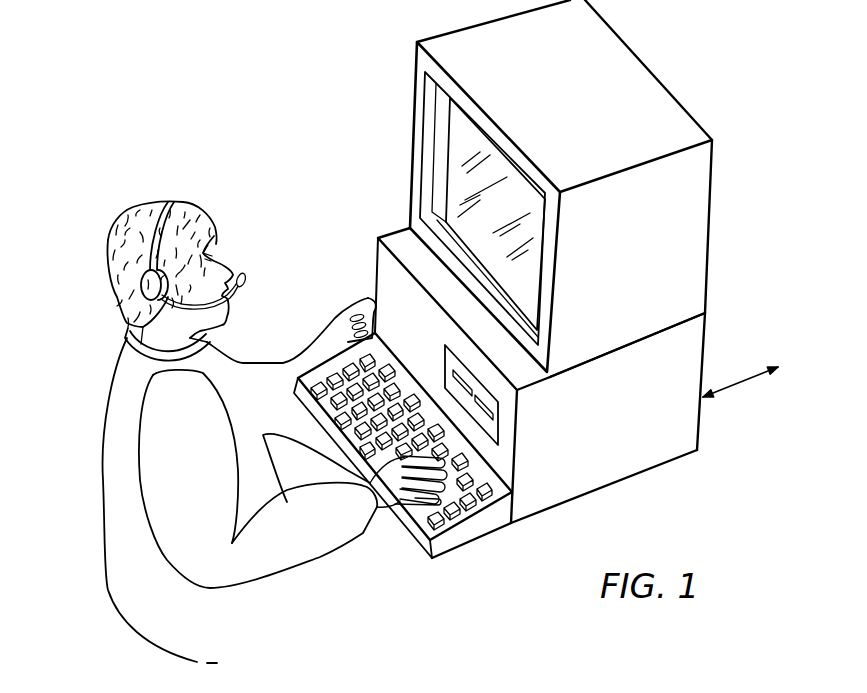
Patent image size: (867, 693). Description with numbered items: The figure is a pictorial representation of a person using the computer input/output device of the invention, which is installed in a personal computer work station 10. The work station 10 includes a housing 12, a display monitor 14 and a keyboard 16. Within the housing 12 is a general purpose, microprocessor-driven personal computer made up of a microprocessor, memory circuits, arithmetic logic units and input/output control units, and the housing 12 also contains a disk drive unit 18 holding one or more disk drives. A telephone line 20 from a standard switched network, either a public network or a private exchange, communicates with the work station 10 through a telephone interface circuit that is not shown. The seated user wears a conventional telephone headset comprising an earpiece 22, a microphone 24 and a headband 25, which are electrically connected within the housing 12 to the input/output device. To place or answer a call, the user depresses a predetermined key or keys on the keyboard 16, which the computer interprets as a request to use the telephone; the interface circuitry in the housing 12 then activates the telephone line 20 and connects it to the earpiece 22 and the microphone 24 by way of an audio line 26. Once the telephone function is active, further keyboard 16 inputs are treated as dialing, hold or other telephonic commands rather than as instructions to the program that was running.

The personal computer work station 10 is at (642, 473).
The housing 12 is at (687, 362).
The display monitor 14 is at (688, 227).
The keyboard 16 is at (455, 540).
The disk drive unit 18 is at (500, 428).
The telephone line 20 is at (740, 394).
The earpiece 22 is at (148, 284).
The microphone 24 is at (242, 282).
The headband 25 is at (170, 197).
The audio line 26 is at (287, 358).